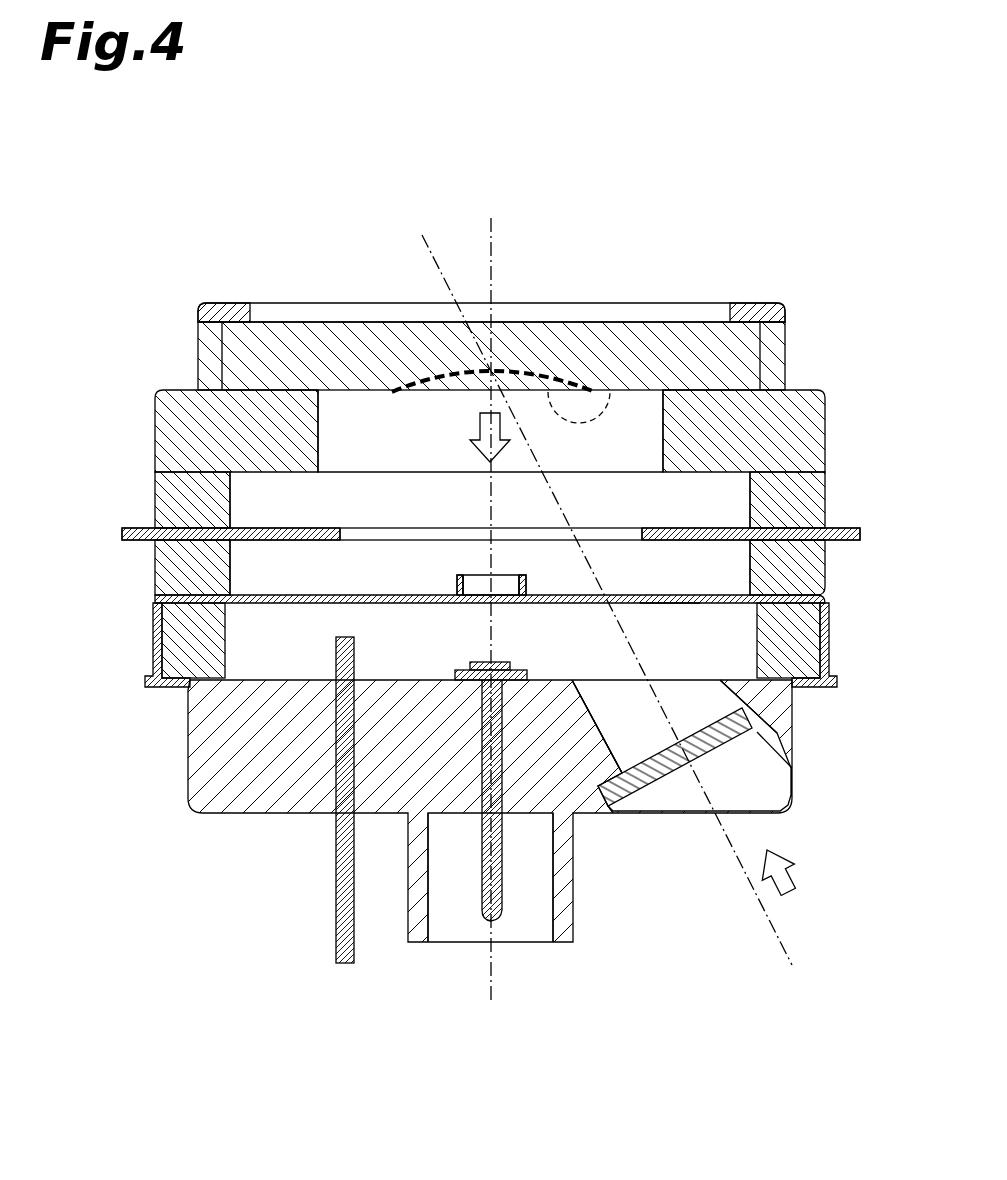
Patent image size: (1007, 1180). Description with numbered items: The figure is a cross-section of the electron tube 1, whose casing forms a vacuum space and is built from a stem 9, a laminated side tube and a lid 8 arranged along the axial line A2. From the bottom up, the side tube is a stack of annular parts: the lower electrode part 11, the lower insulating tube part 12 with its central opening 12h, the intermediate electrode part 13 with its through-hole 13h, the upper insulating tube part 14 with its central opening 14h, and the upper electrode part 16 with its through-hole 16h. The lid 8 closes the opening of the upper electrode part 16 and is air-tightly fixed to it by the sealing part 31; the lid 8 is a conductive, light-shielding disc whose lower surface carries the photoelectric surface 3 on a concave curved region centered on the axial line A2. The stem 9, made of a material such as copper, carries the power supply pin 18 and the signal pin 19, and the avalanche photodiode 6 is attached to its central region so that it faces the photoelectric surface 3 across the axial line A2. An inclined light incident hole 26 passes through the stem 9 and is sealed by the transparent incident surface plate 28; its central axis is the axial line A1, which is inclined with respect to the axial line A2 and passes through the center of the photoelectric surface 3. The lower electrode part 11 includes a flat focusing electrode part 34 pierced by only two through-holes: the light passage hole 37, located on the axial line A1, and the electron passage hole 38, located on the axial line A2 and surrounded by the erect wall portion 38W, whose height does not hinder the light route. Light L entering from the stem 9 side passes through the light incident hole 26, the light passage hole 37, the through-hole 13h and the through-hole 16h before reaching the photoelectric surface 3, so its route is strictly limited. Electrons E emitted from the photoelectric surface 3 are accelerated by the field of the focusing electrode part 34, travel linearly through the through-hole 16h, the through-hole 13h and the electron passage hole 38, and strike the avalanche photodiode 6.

The electron tube 1 is at (727, 216).
The photoelectric surface 3 is at (604, 390).
The avalanche photodiode 6 is at (503, 663).
The lid 8 is at (313, 322).
The stem 9 is at (188, 745).
The lower electrode part 11 is at (155, 635).
The lower insulating tube part 12 is at (155, 570).
The opening of second spacer 12h is at (230, 570).
The intermediate electrode part 13 is at (122, 534).
The through-hole of intermediate electrode part 13h is at (340, 535).
The upper insulating tube part 14 is at (155, 498).
The opening of third spacer 14h is at (230, 502).
The upper electrode part 16 is at (155, 437).
The through-hole of upper electrode part 16h is at (318, 447).
The power supply pin 18 is at (336, 878).
The signal pin 19 is at (483, 905).
The light incident hole 26 is at (663, 752).
The incident surface plate 28 is at (607, 735).
The sealing part 31 is at (198, 312).
The focusing electrode part 34 is at (700, 597).
The light passage hole 37 is at (655, 605).
The electron passage hole 38 is at (453, 589).
The wall portion 38W is at (473, 592).
The axial line A1 is at (424, 250).
The axial line A2 is at (492, 262).
The electrons E is at (470, 428).
The light L is at (797, 868).